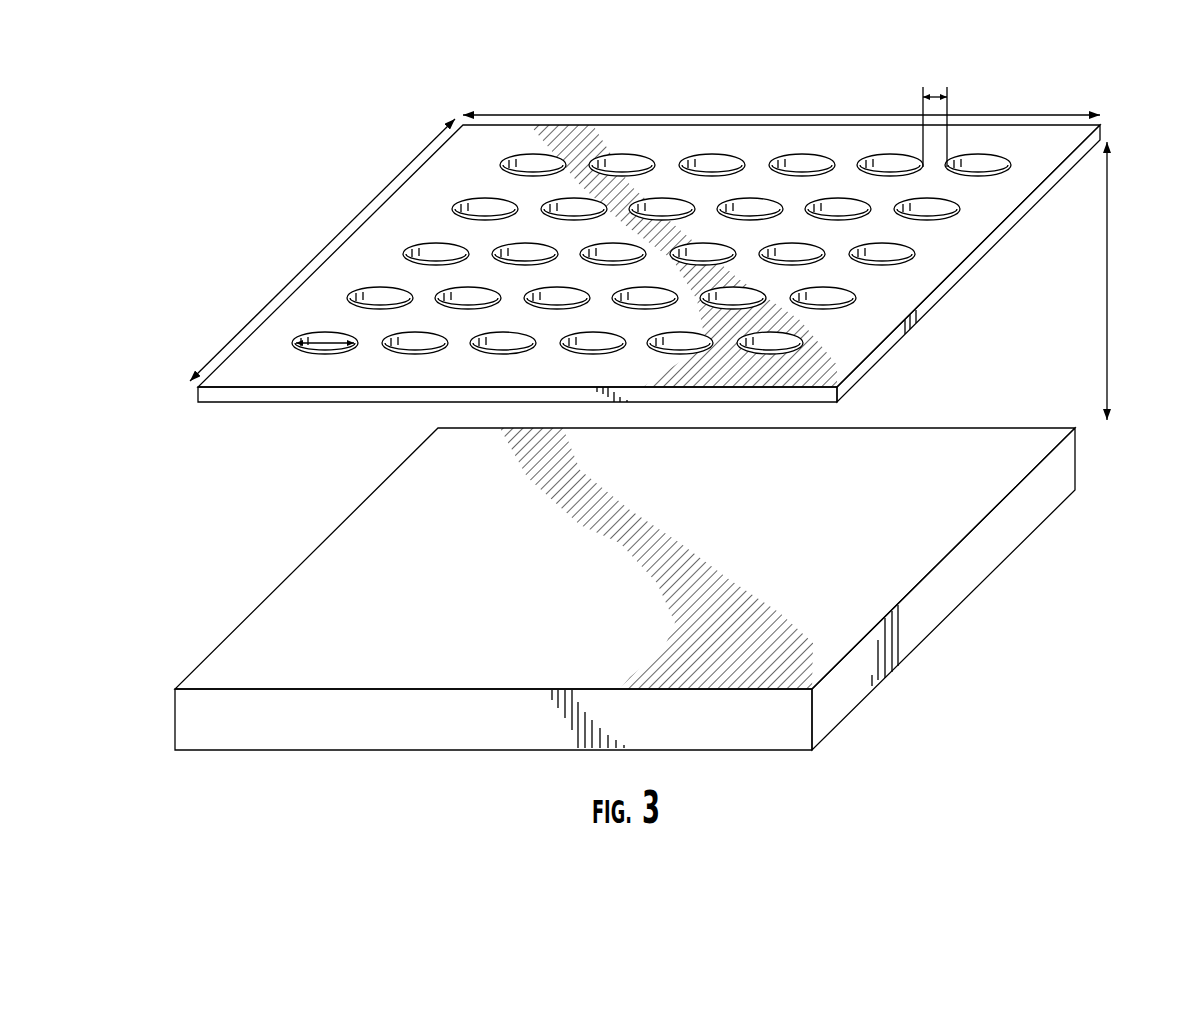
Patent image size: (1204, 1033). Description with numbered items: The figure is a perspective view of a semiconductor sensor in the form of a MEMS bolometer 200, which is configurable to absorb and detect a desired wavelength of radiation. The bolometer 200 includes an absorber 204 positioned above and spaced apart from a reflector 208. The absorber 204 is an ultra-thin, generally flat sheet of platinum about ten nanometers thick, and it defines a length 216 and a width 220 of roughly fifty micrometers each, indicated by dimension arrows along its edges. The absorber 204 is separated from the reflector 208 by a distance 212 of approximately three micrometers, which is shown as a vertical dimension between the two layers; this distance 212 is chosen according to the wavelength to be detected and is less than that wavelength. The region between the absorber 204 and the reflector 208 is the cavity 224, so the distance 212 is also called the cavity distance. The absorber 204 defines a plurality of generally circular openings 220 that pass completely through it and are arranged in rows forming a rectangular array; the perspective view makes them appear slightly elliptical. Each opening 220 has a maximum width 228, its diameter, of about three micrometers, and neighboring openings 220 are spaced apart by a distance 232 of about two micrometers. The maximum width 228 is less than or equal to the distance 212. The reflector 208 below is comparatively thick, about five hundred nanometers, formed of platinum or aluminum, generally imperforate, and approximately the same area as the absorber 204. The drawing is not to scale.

The MEMS bolometer 200 is at (166, 252).
The absorber 204 is at (413, 213).
The reflector 208 is at (345, 608).
The distance 212 is at (1108, 207).
The length 216 is at (770, 115).
The openings 220 is at (323, 247).
The cavity 224 is at (272, 448).
The maximum width 228 is at (318, 352).
The distance 232 is at (933, 92).